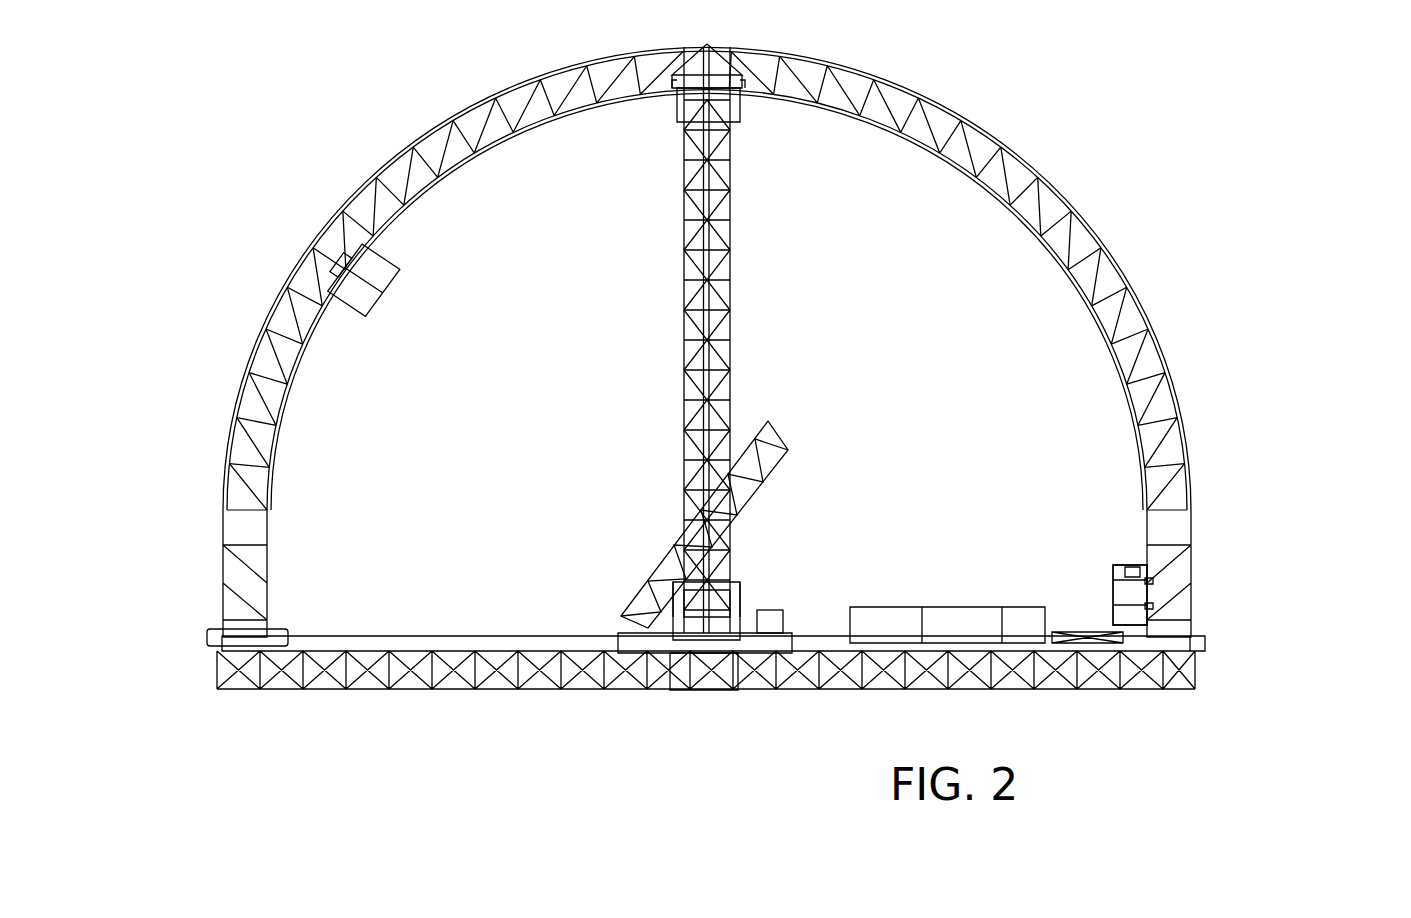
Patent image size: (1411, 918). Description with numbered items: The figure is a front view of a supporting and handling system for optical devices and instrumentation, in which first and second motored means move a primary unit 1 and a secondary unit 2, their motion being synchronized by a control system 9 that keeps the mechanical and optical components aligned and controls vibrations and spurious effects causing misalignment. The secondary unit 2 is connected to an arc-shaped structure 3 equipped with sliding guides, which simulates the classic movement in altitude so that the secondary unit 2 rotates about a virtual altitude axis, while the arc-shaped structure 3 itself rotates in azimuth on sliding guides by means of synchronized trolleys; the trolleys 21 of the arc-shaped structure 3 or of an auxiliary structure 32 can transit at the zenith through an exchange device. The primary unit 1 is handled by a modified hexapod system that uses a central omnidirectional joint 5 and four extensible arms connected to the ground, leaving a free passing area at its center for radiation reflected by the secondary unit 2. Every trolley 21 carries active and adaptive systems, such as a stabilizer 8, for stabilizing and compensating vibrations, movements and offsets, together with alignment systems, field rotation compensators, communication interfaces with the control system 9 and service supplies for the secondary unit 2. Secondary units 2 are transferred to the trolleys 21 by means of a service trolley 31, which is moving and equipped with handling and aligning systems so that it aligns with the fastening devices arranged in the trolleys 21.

The primary unit 1 is at (755, 471).
The secondary unit 2 is at (689, 350).
The trolley 21 is at (1305, 598).
The arc-shaped structure 3 is at (689, 482).
The service trolley 31 is at (1125, 635).
The auxiliary structure 32 is at (1027, 190).
The central omnidirectional joint 5 is at (695, 668).
The stabilizer 8 is at (1143, 572).
The control system 9 is at (770, 610).